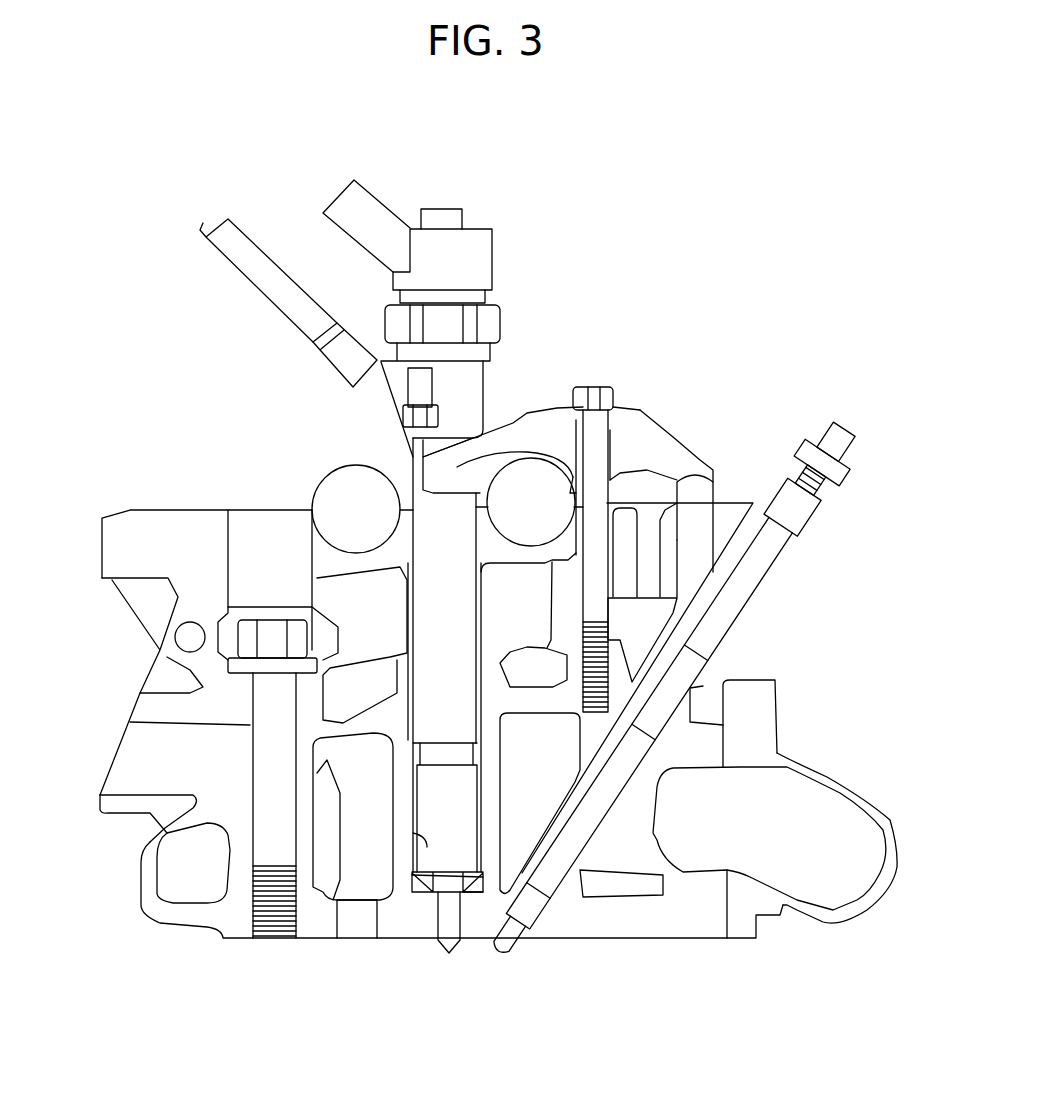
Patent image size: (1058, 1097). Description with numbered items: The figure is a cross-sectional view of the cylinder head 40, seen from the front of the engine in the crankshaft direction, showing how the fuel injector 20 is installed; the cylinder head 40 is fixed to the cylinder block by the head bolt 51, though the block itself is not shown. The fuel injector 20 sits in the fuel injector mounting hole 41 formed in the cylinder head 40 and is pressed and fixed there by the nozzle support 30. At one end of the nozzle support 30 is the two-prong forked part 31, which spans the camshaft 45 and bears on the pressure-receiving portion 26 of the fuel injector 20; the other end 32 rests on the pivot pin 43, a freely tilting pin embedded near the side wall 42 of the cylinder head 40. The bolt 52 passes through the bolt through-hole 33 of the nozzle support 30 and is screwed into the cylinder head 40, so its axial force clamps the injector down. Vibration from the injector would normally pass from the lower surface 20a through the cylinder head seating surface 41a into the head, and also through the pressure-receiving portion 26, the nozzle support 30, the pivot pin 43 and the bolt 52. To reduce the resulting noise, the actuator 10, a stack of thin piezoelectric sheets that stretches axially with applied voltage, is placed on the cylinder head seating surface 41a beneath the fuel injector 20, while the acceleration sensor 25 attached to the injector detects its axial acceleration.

The actuator 10 is at (468, 887).
The fuel injector 20 is at (482, 235).
The lower surface 20a is at (432, 897).
The acceleration sensor 25 is at (357, 408).
The pressure-receiving portion 26 is at (408, 460).
The nozzle support 30 is at (650, 433).
The two-prong forked part 31 is at (491, 437).
The other end 32 is at (685, 450).
The bolt through-hole 33 is at (607, 443).
The cylinder head 40 is at (104, 818).
The fuel injector mounting hole 41 is at (414, 855).
The cylinder head seating surface 41a is at (435, 887).
The side wall 42 is at (753, 513).
The pivot pin 43 is at (708, 492).
The camshaft 45 is at (532, 482).
The head bolt 51 is at (263, 737).
The bolt 52 is at (590, 388).